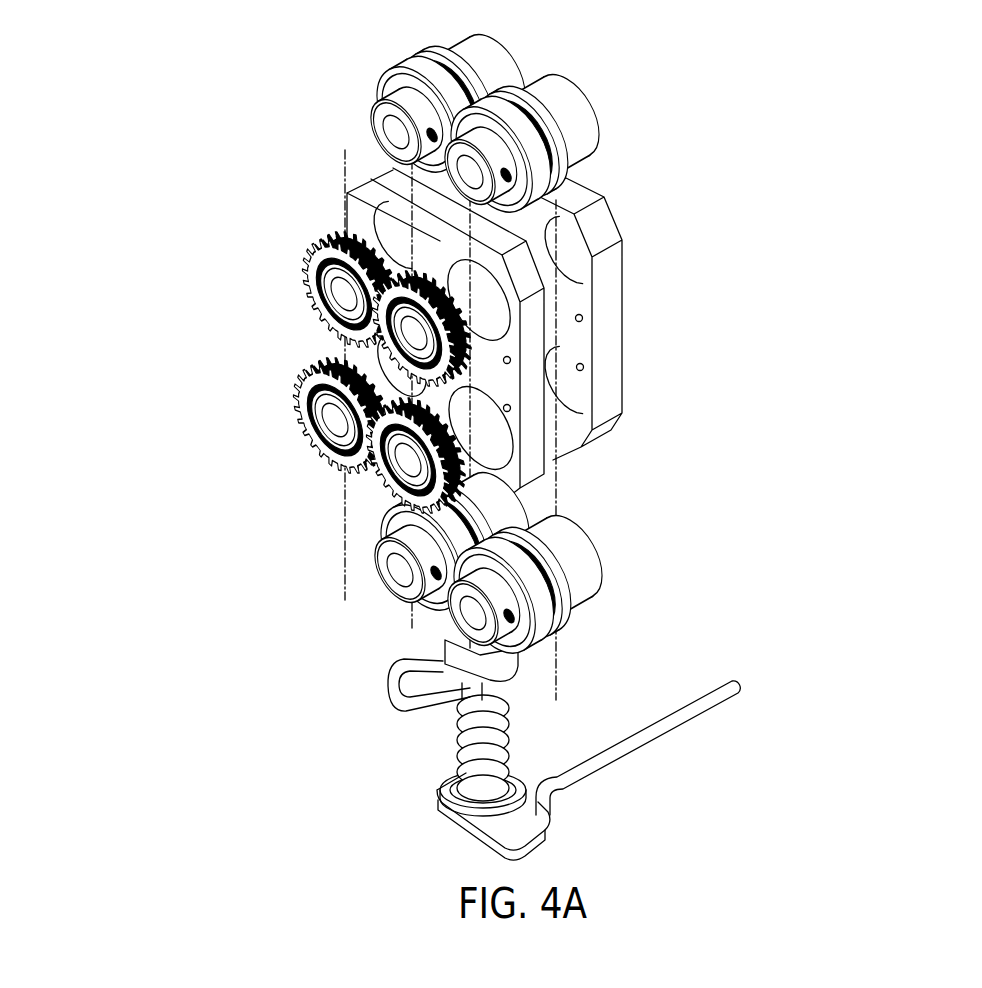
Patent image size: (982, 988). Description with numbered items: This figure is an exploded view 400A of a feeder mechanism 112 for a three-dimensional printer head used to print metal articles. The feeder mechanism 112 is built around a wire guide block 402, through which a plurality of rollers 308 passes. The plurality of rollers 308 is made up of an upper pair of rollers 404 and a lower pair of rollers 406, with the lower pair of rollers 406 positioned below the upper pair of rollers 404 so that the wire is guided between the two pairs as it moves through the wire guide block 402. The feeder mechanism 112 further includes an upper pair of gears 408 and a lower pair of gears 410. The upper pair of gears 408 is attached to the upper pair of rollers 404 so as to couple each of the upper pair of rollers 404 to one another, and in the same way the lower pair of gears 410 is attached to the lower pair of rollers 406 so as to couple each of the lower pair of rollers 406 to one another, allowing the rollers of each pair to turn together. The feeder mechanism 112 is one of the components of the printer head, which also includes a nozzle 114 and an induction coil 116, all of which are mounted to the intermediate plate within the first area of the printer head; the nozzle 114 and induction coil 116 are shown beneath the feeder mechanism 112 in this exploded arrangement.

The exploded view 400A is at (521, 445).
The wire guide block 402 is at (563, 353).
The upper pair of rollers 404 is at (588, 107).
The lower pair of rollers 406 is at (598, 541).
The upper pair of gears 408 is at (308, 290).
The lower pair of gears 410 is at (346, 455).
The plurality of rollers 308 is at (507, 358).
The feeder mechanism 112 is at (153, 18).
The nozzle 114 is at (433, 667).
The induction coil 116 is at (465, 774).